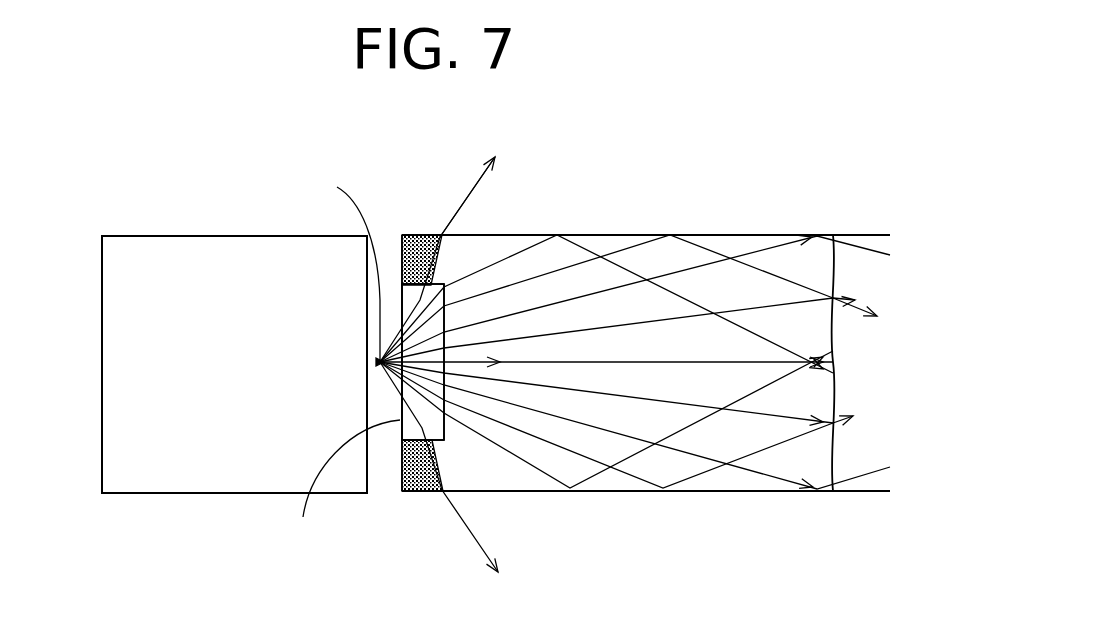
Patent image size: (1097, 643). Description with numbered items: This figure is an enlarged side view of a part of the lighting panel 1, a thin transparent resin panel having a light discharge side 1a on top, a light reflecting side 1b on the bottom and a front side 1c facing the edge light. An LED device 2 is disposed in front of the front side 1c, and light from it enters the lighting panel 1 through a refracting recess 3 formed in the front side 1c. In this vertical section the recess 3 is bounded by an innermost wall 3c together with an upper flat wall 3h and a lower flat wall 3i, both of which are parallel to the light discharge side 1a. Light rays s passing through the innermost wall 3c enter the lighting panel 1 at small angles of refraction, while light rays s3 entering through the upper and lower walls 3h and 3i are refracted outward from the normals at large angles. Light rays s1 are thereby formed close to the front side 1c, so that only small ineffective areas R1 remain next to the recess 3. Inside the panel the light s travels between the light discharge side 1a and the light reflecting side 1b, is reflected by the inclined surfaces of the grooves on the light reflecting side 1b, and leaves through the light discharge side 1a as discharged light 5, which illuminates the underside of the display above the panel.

The lighting panel 1 is at (748, 236).
The light discharge side 1a is at (573, 236).
The light reflecting side 1b is at (642, 493).
The front side 1c is at (402, 457).
The LED device 2 is at (183, 237).
The refracting recess 3 is at (447, 444).
The innermost wall 3c is at (447, 424).
The upper flat wall 3h is at (420, 272).
The lower flat wall 3i is at (431, 446).
The discharged light 5 is at (468, 192).
The ineffective area R1 is at (422, 278).
The light s is at (547, 278).
The light ray s1 is at (441, 256).
The light ray s3 is at (344, 363).